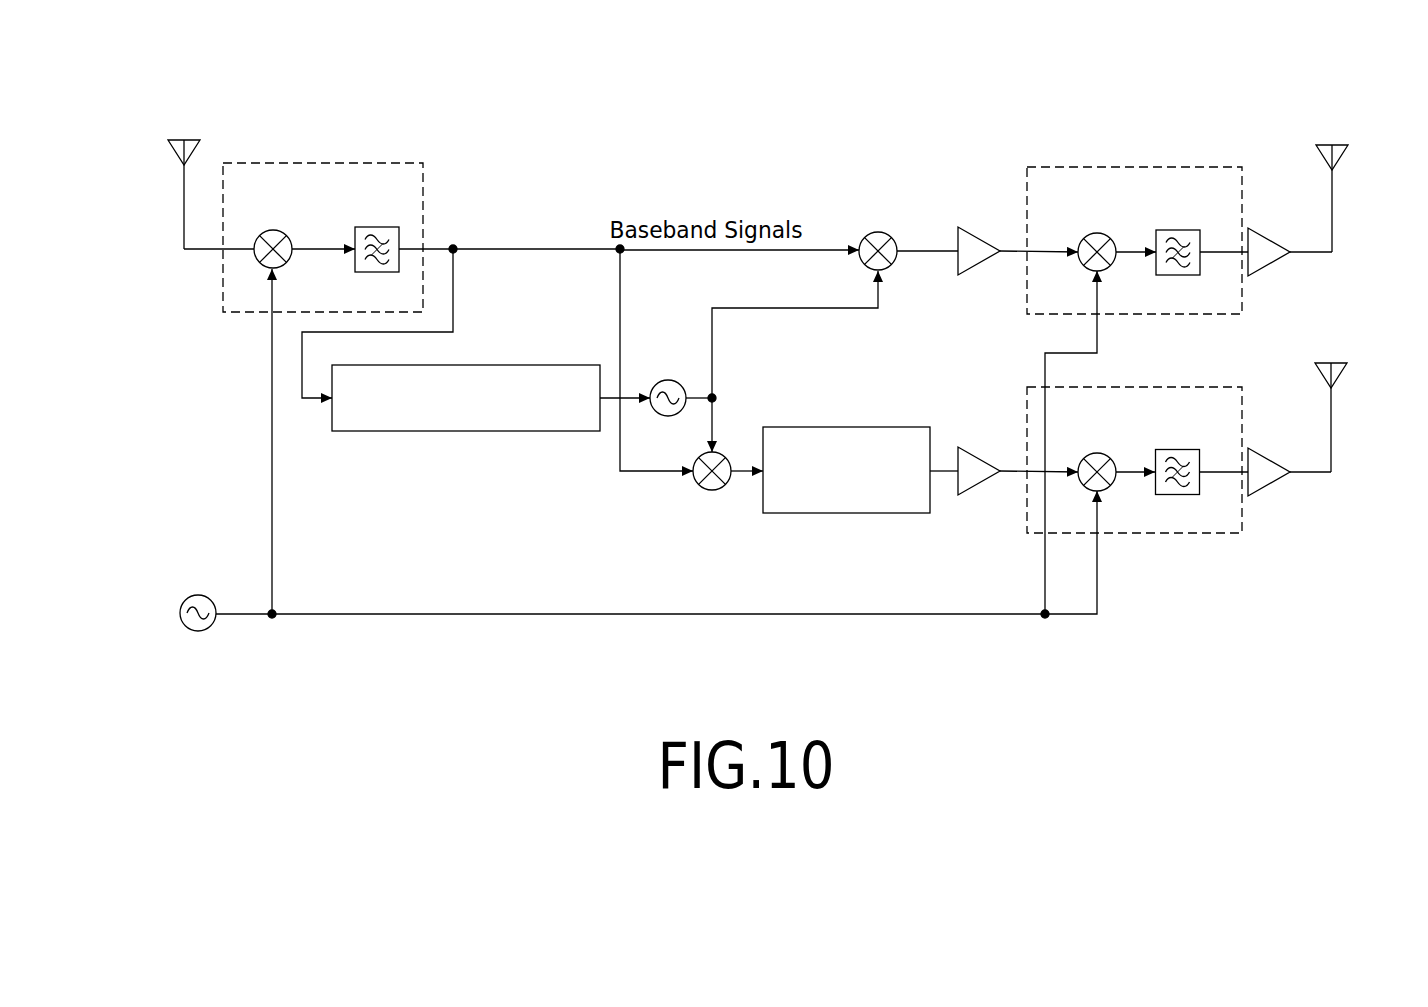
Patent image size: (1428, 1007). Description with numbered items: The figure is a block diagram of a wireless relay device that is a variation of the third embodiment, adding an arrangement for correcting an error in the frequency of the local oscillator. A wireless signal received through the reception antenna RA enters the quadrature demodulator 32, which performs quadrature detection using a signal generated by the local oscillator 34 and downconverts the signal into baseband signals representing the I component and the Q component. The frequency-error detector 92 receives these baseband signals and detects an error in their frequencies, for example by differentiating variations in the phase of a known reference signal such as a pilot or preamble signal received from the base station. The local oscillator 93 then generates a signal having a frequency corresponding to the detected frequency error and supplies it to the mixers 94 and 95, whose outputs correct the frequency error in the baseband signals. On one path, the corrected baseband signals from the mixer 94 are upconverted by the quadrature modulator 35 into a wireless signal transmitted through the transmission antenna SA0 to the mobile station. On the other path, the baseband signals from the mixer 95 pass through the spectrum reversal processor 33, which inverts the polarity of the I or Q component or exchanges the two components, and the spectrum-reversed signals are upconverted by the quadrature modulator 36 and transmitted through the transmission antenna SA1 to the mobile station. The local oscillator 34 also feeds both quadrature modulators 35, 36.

The quadrature demodulator 32 is at (325, 162).
The spectrum reversal processor 33 is at (850, 515).
The local oscillator 34 is at (197, 595).
The quadrature modulator 35 is at (1117, 165).
The quadrature modulator 36 is at (1177, 535).
The frequency-error detector 92 is at (462, 432).
The local oscillator 93 is at (668, 378).
The mixer 94 is at (877, 230).
The mixer 95 is at (712, 492).
The reception antenna RA is at (182, 205).
The transmission antenna SA0 is at (1333, 212).
The transmission antenna SA1 is at (1333, 430).